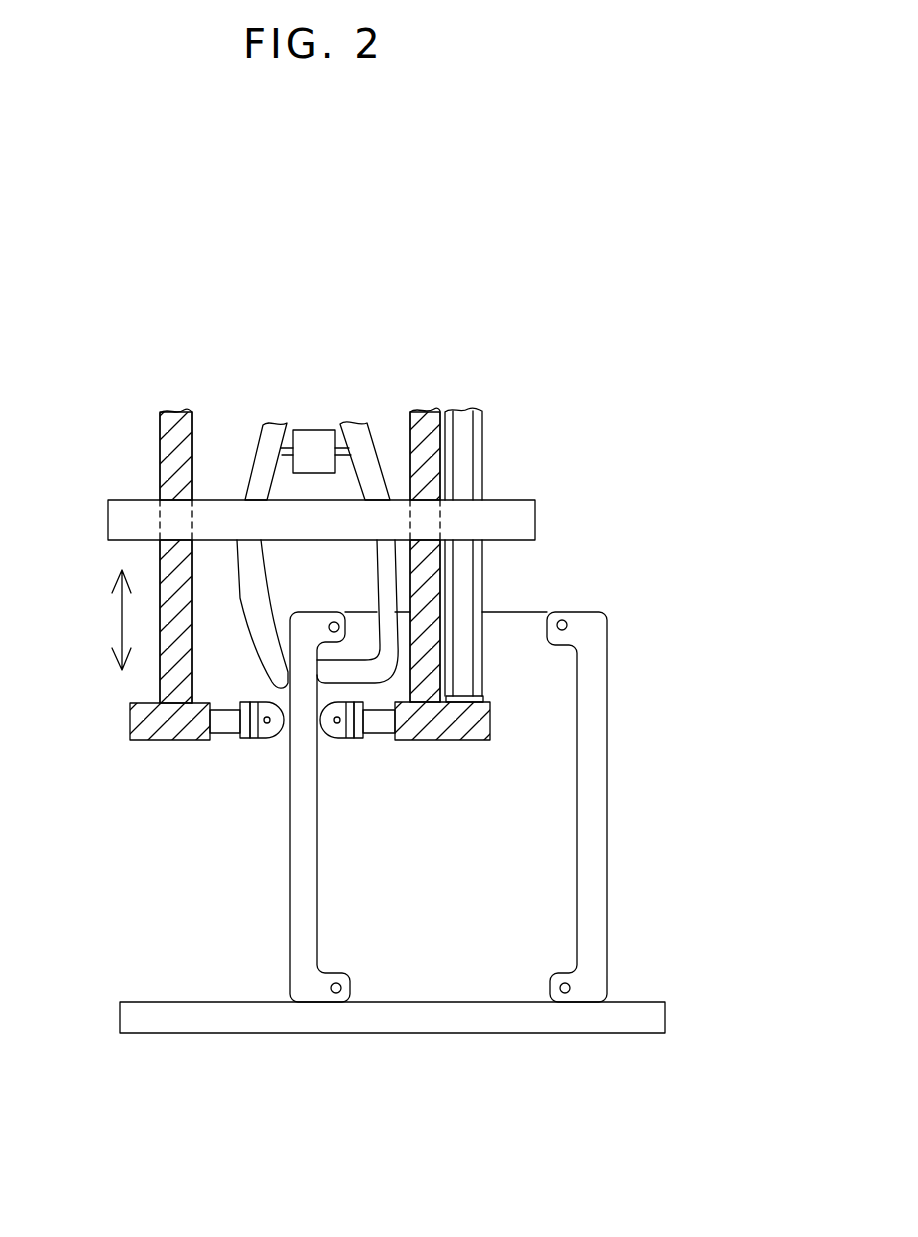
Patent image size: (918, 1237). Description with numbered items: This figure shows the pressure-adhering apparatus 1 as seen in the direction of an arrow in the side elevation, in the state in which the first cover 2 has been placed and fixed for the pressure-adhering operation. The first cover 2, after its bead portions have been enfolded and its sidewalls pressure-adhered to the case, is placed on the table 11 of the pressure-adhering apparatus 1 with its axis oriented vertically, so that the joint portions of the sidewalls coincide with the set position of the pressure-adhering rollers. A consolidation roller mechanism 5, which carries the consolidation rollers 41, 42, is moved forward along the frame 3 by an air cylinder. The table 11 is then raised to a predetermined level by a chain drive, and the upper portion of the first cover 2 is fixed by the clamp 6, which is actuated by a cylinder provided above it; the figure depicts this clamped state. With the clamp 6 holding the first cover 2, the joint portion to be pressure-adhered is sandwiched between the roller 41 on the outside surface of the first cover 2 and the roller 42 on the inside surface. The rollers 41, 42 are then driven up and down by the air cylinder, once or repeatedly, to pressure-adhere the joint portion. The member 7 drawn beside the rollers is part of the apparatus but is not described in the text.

The pressure-adhering apparatus 1 is at (338, 294).
The first cover 2 is at (626, 745).
The frame 3 is at (526, 523).
The consolidation roller mechanism 5 is at (127, 471).
The clamp 6 is at (360, 433).
The tube 7 is at (481, 457).
The table 11 is at (657, 1015).
The consolidation roller 41 is at (280, 738).
The consolidation roller 42 is at (333, 738).